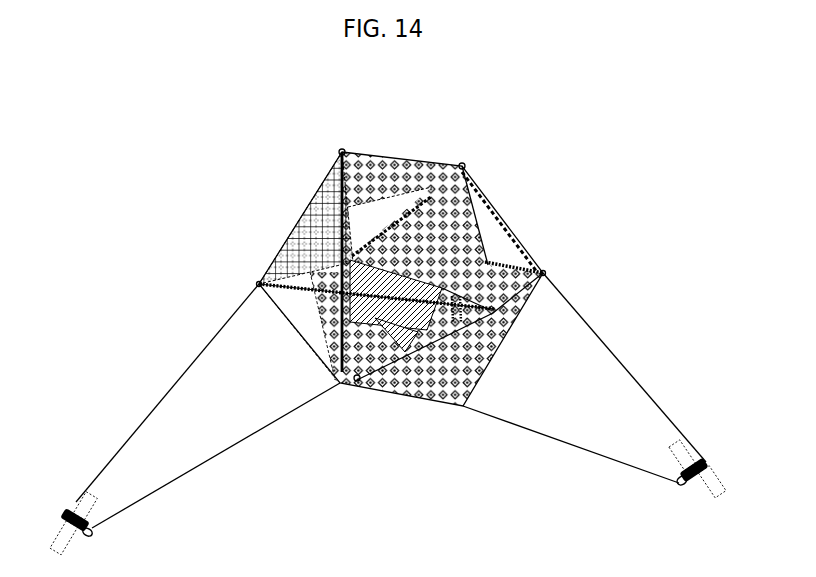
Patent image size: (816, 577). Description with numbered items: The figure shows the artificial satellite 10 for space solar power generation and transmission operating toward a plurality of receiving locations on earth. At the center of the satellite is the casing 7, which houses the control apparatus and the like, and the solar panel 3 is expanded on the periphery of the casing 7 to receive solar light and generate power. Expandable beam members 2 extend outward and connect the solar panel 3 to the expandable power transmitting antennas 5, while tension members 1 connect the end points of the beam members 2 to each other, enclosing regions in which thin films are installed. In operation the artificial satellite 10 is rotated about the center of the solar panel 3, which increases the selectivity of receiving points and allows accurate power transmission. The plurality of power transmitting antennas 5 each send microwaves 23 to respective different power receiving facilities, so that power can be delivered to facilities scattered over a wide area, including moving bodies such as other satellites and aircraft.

The tension member 1 is at (318, 198).
The expandable beam member 2 is at (246, 307).
The solar panel 3 is at (302, 248).
The expandable power transmitting antenna 5 is at (546, 274).
The casing 7 is at (373, 318).
The artificial satellite 10 is at (404, 284).
The microwaves 23 is at (590, 358).